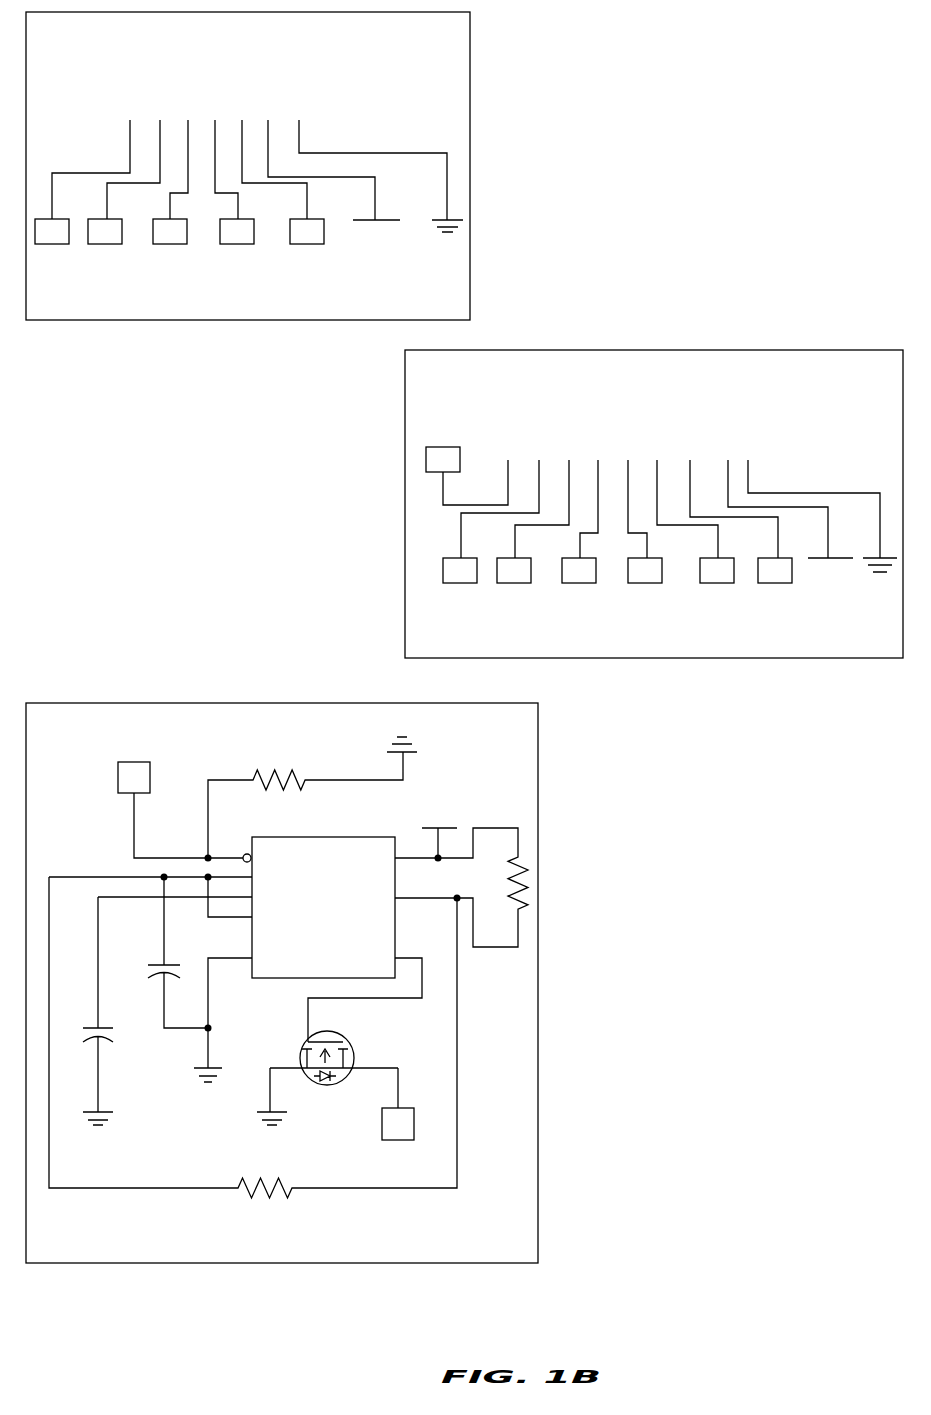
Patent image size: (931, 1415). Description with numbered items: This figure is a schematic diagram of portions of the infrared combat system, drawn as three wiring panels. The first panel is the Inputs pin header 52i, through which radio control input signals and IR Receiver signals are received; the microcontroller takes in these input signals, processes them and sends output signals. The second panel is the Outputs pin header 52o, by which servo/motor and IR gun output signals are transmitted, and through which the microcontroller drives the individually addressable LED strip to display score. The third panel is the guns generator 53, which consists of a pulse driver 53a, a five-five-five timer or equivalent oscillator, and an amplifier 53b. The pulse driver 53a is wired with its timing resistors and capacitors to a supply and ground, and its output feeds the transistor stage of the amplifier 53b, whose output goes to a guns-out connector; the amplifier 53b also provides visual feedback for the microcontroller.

The Inputs pin header 52i is at (248, 166).
The Outputs pin header 52o is at (654, 504).
The guns generator 53 is at (282, 983).
The pulse driver 53a is at (319, 897).
The amplifier 53b is at (334, 1056).